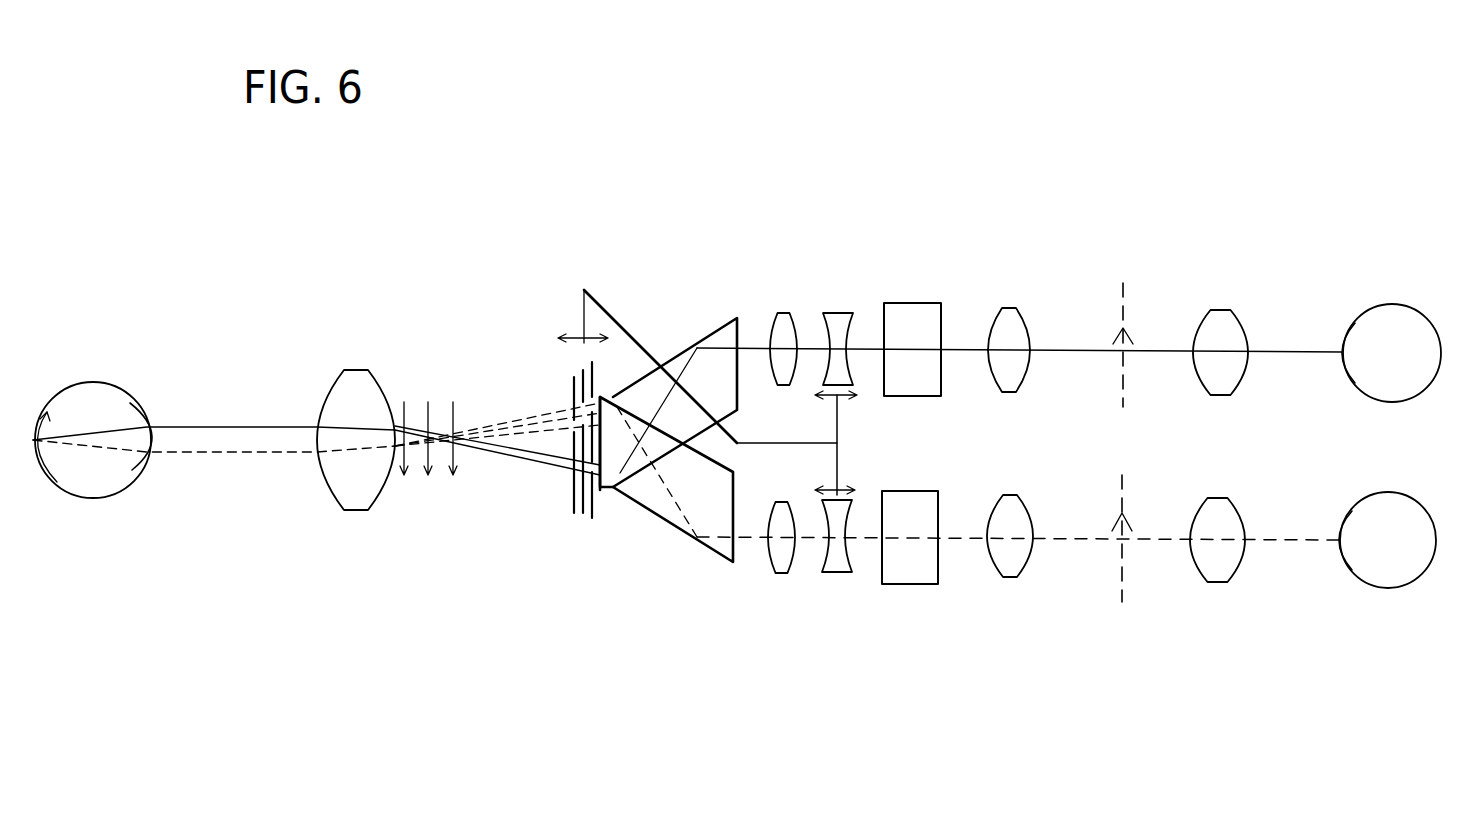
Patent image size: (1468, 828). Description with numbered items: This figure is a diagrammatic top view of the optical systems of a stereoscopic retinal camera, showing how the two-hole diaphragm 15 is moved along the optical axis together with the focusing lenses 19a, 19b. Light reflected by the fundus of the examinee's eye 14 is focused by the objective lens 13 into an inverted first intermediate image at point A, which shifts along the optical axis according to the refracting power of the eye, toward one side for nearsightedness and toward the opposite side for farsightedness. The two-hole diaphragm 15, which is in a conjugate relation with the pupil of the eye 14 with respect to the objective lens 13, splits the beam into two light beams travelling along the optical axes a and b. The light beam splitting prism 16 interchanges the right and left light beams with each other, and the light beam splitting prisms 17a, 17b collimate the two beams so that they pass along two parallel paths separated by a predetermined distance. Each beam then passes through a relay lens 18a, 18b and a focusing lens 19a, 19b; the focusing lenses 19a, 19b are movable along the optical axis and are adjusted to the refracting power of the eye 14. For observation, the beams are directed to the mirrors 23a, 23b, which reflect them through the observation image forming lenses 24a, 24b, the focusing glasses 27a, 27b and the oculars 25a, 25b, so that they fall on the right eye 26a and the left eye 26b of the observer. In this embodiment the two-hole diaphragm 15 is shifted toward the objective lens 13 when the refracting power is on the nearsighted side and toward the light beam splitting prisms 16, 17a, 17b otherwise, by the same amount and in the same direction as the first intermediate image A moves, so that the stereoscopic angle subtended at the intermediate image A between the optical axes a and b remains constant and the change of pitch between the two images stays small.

The objective lens 13 is at (357, 377).
The examinee's eye 14 is at (105, 387).
The two-hole diaphragm 15 is at (583, 369).
The light beam splitting prism 16 is at (607, 495).
The light beam splitting prism 17a is at (717, 338).
The light beam splitting prism 17b is at (670, 520).
The relay lens 18a is at (783, 317).
The relay lens 18b is at (782, 573).
The focusing lens 19a is at (838, 322).
The focusing lens 19b is at (835, 572).
The mirror 23a is at (918, 305).
The mirror 23b is at (908, 585).
The observation image forming lens 24a is at (1012, 310).
The observation image forming lens 24b is at (1012, 577).
The ocular 25a is at (1222, 312).
The ocular 25b is at (1215, 582).
The right eye of the observer 26a is at (1383, 307).
The left eye of the observer 26b is at (1398, 587).
The focusing glass 27a is at (1123, 285).
The focusing glass 27b is at (1122, 597).
The first intermediate image A is at (438, 462).
The optical axis a is at (520, 467).
The optical axis b is at (513, 415).